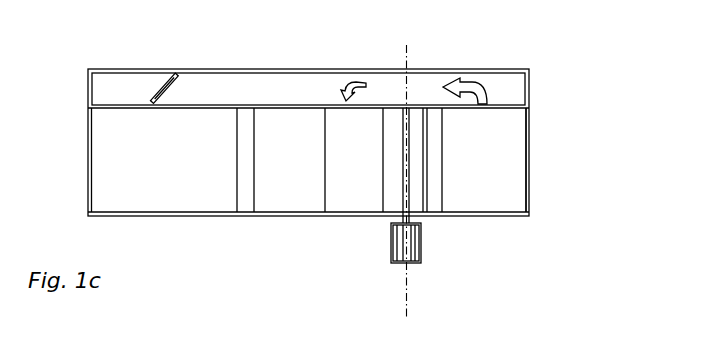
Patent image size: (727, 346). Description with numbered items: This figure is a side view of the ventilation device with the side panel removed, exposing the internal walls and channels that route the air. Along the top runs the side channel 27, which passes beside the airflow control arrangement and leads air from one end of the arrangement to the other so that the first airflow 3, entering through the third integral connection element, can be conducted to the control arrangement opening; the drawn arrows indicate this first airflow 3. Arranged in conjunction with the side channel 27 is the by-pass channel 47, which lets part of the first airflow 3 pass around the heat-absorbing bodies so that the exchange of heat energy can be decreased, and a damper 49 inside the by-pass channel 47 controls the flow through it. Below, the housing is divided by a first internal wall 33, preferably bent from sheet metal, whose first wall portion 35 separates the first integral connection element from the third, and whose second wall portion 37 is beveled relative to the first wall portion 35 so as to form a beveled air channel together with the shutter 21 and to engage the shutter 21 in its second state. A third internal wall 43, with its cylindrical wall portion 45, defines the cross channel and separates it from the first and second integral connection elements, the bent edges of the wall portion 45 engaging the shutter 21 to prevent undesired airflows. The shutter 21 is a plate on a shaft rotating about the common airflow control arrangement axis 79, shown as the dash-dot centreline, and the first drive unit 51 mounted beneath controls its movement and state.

The first airflow 3 is at (478, 90).
The shutter 21 is at (390, 198).
The side channel 27 is at (303, 77).
The first internal wall 33 is at (483, 200).
The first wall portion 35 is at (424, 106).
The second wall portion 37 is at (433, 198).
The third internal wall 43 is at (333, 200).
The wall portion 45 is at (278, 205).
The by-pass channel 47 is at (131, 88).
The damper 49 is at (173, 78).
The first drive unit 51 is at (404, 263).
The common airflow control arrangement axis 79 is at (407, 305).